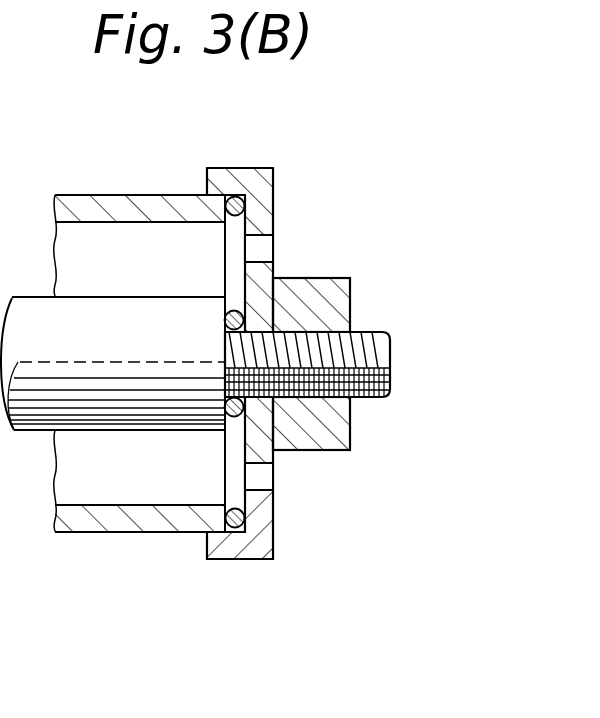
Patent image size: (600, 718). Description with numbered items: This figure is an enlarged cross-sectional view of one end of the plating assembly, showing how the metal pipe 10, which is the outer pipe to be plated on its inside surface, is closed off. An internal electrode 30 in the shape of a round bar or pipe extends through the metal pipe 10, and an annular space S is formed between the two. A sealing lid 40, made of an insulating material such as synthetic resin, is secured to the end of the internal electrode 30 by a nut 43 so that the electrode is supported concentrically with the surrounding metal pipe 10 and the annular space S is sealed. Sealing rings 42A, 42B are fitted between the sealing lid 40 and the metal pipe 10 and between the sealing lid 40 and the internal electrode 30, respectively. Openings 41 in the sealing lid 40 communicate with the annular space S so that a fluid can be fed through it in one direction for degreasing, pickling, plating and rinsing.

The metal pipe 10 is at (78, 205).
The annular space S is at (145, 250).
The internal electrode 30 is at (30, 303).
The sealing lid 40 is at (240, 180).
The opening 41 is at (266, 247).
The sealing ring 42A is at (242, 563).
The sealing ring 42B is at (340, 417).
The nut 43 is at (340, 300).